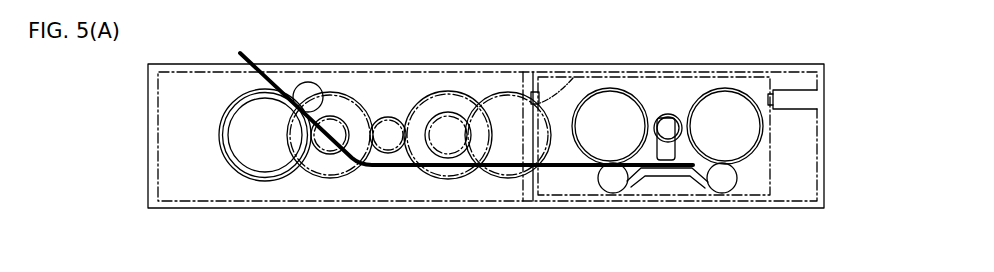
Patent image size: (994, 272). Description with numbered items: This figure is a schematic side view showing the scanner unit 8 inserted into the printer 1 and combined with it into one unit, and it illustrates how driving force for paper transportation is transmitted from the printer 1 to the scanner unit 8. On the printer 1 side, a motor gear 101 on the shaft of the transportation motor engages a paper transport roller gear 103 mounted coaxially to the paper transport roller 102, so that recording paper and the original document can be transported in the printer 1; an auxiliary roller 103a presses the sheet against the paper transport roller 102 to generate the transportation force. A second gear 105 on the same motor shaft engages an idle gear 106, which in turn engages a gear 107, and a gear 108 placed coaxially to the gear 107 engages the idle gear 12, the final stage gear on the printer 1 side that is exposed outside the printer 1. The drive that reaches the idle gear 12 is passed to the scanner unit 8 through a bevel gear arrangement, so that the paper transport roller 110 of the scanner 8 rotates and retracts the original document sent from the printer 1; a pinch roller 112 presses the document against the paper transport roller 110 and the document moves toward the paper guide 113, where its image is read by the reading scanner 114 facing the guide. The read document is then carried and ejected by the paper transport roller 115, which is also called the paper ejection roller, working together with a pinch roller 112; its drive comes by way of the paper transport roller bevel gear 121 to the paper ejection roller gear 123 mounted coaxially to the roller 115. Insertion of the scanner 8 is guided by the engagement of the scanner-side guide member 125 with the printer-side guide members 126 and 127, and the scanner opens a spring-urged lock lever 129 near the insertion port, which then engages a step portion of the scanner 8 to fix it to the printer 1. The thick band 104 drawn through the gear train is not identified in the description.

The printer 1 is at (188, 208).
The scanner unit 8 is at (562, 196).
The idle gear 12 is at (500, 91).
The motor gear 101 is at (341, 117).
The paper transport roller 102 is at (283, 179).
The paper transport roller gear 103 is at (257, 179).
The auxiliary roller 103a is at (310, 81).
The belt 104 is at (250, 56).
The gear 105 is at (371, 107).
The idle gear 106 is at (380, 155).
The gear 107 is at (457, 92).
The gear 108 is at (427, 157).
The paper transport roller 110 is at (608, 100).
The pinch roller 112 is at (605, 194).
The paper guide 113 is at (655, 178).
The reading scanner 114 is at (670, 116).
The paper transport roller 115 is at (742, 102).
The paper transport roller bevel gear 121 is at (632, 93).
The paper ejection roller gear 123 is at (747, 158).
The guide member 125 is at (780, 101).
The guide member 126 is at (536, 92).
The guide member 127 is at (794, 110).
The lock lever 129 is at (573, 78).